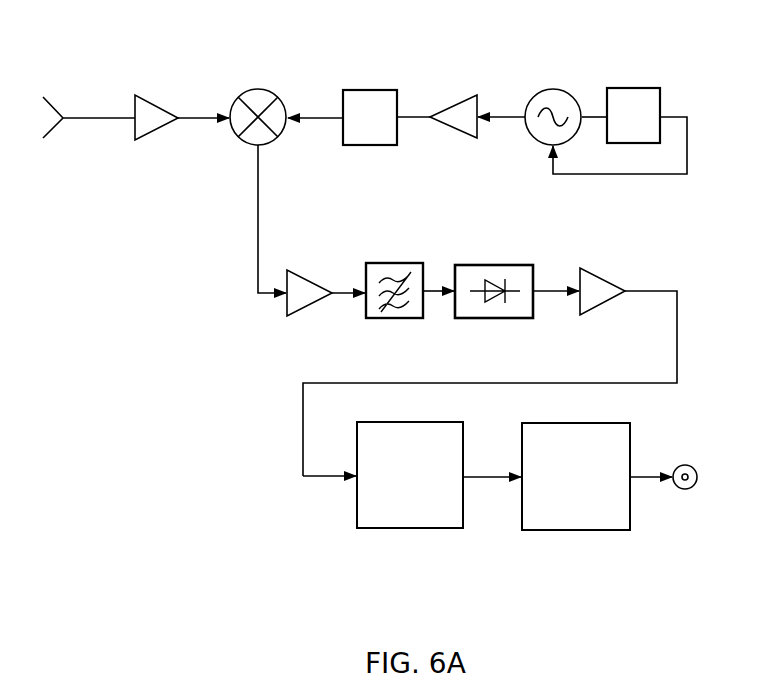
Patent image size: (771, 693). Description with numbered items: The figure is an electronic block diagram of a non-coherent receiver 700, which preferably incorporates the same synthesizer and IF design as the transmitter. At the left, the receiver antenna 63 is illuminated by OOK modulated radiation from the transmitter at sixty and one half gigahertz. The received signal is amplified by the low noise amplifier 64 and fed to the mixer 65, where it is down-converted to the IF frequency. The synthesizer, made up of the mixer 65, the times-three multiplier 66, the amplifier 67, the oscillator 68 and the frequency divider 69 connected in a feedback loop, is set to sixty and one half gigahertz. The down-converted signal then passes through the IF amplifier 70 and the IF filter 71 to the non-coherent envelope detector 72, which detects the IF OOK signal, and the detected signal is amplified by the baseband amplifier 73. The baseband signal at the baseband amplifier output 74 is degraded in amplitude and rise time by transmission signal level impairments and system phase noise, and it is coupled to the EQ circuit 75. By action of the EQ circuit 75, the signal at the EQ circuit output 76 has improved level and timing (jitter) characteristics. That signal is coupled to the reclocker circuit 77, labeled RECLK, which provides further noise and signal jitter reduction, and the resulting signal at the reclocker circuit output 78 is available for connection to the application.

The antenna 63 is at (60, 142).
The low noise amplifier 64 is at (157, 145).
The mixer 65 is at (280, 153).
The frequency multiplier 66 is at (370, 82).
The synthesizer amplifier 67 is at (460, 92).
The oscillator 68 is at (553, 82).
The frequency divider 69 is at (638, 85).
The IF amplifier 70 is at (302, 322).
The IF filter 71 is at (397, 322).
The non-coherent envelope detector 72 is at (495, 257).
The baseband amplifier 73 is at (600, 262).
The baseband amplifier output 74 is at (297, 423).
The EQ circuit 75 is at (405, 537).
The EQ circuit output 76 is at (488, 487).
The reclocker circuit 77 is at (565, 538).
The reclocker circuit output 78 is at (697, 452).
The receiver 700 is at (235, 558).